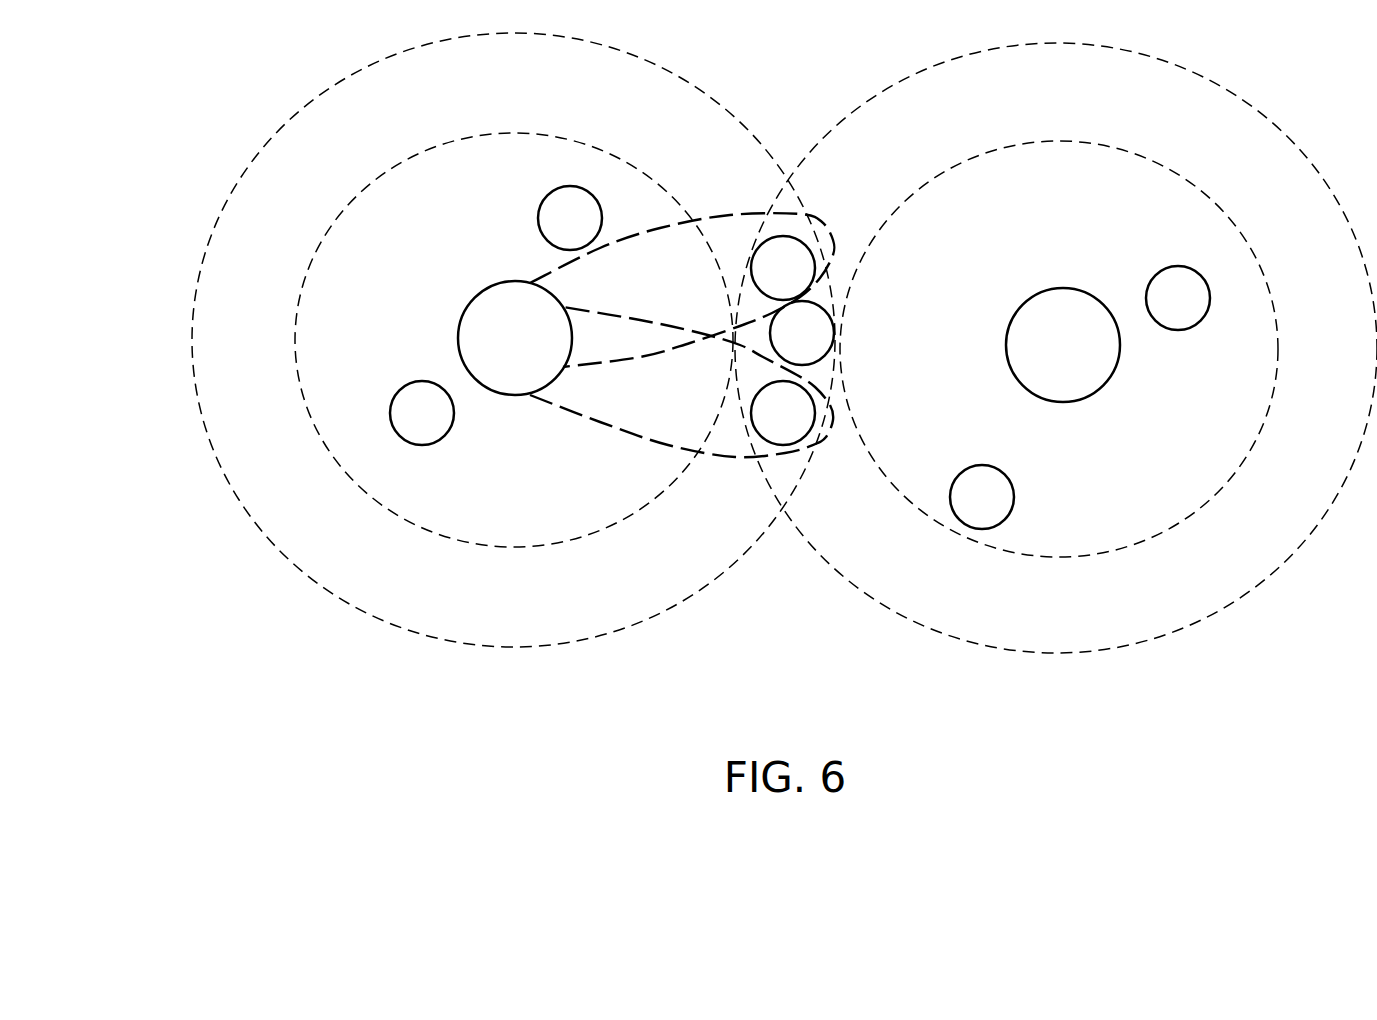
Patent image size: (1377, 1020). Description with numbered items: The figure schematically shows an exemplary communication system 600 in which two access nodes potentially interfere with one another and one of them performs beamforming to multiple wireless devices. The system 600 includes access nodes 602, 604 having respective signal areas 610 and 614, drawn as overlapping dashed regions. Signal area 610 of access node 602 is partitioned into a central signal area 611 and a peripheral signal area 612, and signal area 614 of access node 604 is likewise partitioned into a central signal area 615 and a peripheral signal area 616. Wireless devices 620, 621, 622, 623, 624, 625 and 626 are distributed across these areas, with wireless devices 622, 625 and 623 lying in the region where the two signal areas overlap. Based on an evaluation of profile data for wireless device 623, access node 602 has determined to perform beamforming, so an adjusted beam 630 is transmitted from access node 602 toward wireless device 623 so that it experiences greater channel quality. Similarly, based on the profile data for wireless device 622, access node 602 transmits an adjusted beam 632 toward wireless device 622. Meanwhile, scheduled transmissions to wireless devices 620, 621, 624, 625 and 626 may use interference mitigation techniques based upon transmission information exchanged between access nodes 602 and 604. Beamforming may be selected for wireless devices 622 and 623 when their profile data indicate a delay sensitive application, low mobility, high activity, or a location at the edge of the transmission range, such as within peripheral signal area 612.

The system 600 is at (418, 714).
The access node 602 is at (515, 338).
The access node 604 is at (1063, 345).
The signal area 610 is at (660, 633).
The central signal area 611 is at (438, 535).
The peripheral signal area 612 is at (312, 580).
The signal area 614 is at (914, 655).
The central signal area 615 is at (1128, 545).
The peripheral signal area 616 is at (1262, 582).
The wireless device 620 is at (422, 413).
The wireless device 621 is at (570, 218).
The wireless device 622 is at (783, 268).
The wireless device 623 is at (783, 413).
The wireless device 624 is at (982, 497).
The wireless device 625 is at (802, 333).
The wireless device 626 is at (1178, 298).
The adjusted beam 630 is at (668, 445).
The adjusted beam 632 is at (727, 214).